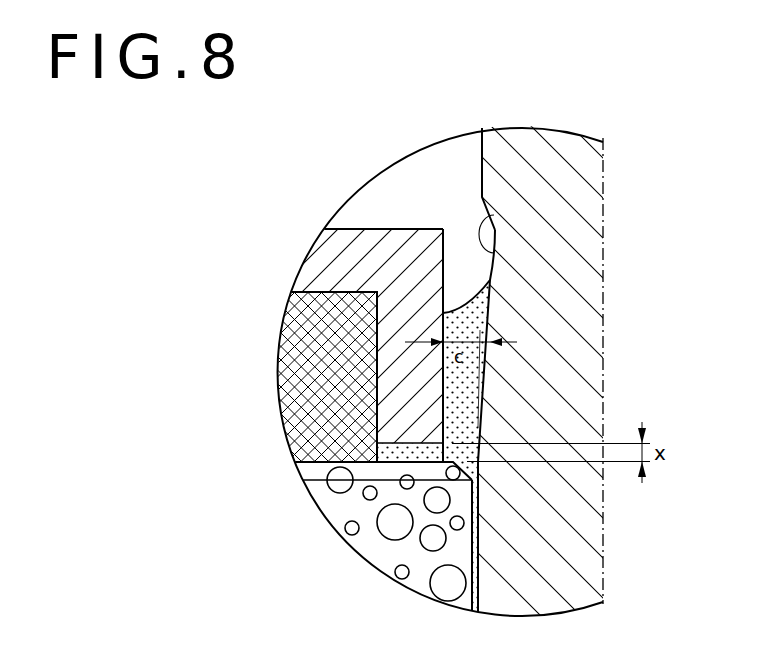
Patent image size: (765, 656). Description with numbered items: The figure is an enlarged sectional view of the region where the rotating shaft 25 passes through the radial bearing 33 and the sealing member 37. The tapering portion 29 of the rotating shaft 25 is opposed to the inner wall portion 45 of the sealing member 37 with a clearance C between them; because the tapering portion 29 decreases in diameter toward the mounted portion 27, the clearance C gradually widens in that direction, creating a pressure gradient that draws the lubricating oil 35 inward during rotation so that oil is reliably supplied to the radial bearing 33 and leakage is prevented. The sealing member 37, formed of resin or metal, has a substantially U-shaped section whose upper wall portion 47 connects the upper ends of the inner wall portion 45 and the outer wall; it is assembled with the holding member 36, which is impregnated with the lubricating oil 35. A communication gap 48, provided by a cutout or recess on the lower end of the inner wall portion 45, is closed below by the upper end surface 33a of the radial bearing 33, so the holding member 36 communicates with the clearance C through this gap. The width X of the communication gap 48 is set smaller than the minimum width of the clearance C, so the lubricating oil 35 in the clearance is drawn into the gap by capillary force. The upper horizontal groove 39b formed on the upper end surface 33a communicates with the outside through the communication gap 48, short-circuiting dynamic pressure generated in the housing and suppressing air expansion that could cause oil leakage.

The rotating shaft 25 is at (482, 165).
The mounted portion 27 is at (538, 143).
The tapering portion 29 is at (496, 215).
The radial bearing 33 is at (342, 515).
The upper end surface of the radial bearing 33a is at (308, 444).
The lubricating oil 35 is at (488, 303).
The holding member 36 is at (292, 348).
The sealing member 37 is at (360, 229).
The upper horizontal groove 39b is at (318, 470).
The inner wall portion 45 is at (455, 250).
The upper wall portion 47 is at (388, 229).
The communication gap 48 is at (392, 455).